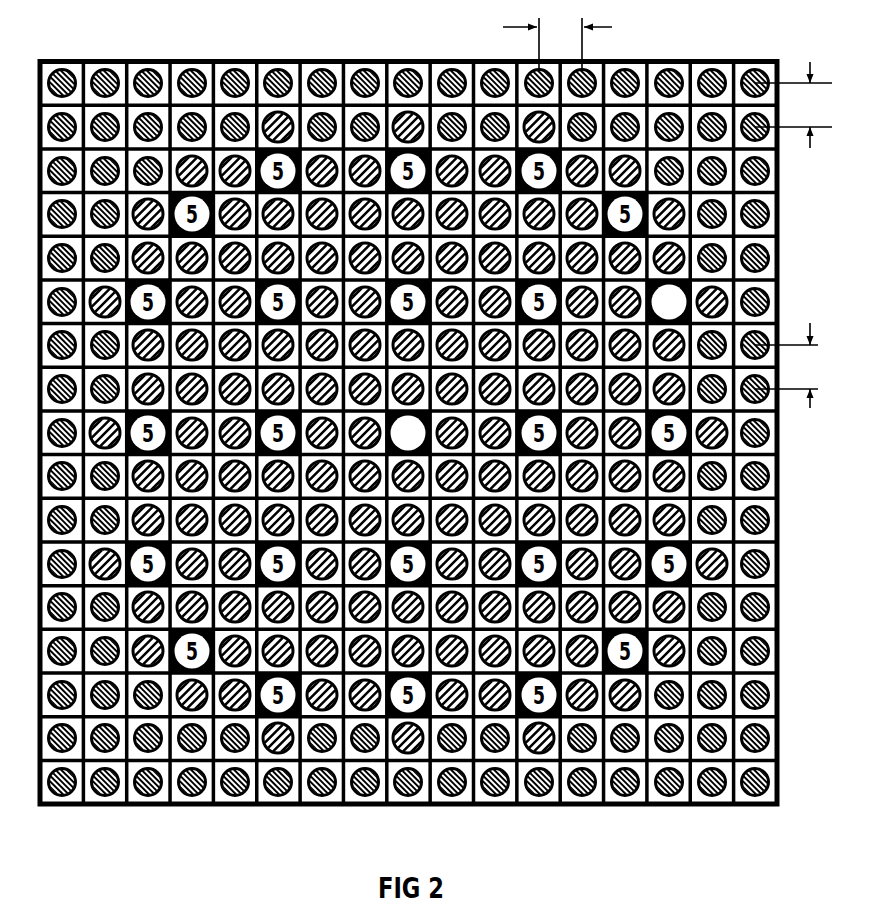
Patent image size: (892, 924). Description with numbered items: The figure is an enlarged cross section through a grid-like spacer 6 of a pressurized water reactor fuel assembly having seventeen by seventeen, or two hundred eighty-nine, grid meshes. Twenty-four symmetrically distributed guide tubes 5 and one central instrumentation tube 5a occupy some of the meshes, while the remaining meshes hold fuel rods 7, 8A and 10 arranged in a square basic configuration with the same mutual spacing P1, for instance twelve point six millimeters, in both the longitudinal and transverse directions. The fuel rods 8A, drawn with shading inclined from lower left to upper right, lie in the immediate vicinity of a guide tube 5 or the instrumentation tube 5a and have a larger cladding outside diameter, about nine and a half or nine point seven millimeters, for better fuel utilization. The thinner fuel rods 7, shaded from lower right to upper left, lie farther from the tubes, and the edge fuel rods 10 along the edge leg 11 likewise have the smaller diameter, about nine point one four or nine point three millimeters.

The guide tube 5 is at (672, 305).
The instrumentation tube 5a is at (407, 433).
The grid-like spacer 6 is at (215, 61).
The fuel rod 7 is at (316, 113).
The fuel rod 8A is at (240, 158).
The edge fuel rod 10 is at (140, 75).
The edge leg 11 is at (622, 61).
The spacing P1 is at (667, 213).